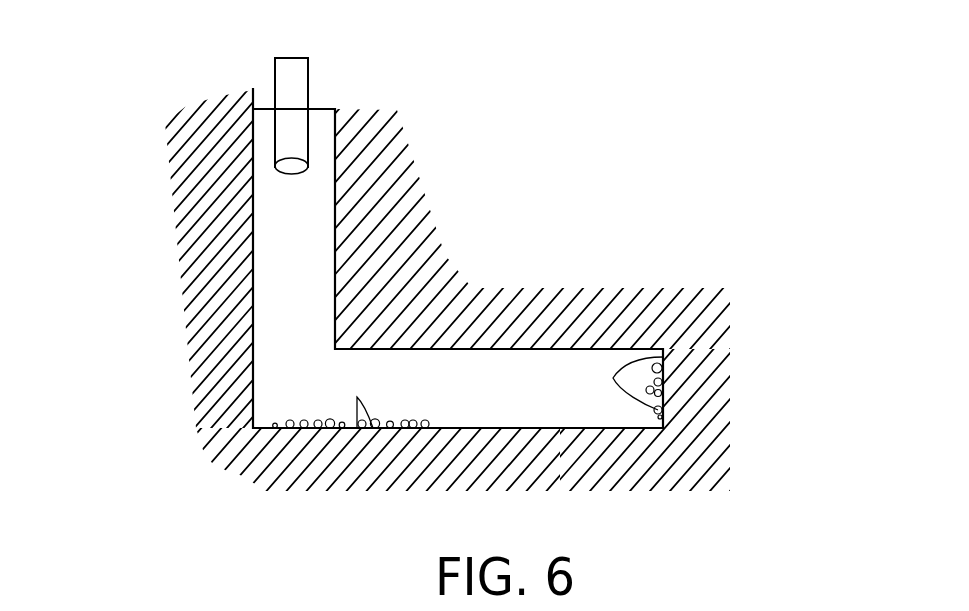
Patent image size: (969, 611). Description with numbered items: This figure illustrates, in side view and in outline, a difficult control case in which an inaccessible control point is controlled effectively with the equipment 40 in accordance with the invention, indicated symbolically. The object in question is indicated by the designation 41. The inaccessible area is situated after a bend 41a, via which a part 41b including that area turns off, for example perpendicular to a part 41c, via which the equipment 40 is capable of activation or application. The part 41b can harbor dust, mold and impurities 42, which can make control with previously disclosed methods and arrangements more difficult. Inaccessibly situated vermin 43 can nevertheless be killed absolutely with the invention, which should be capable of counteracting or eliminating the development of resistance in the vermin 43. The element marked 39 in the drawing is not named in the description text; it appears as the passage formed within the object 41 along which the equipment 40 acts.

The passage 39 is at (572, 365).
The tube 40 is at (265, 72).
The block 41 is at (484, 324).
The bottom portion of block 41a is at (213, 494).
The right portion of block 41b is at (530, 293).
The left portion of block 41c is at (155, 132).
The deposit 42 is at (355, 430).
The deposit at passage end 43 is at (663, 357).